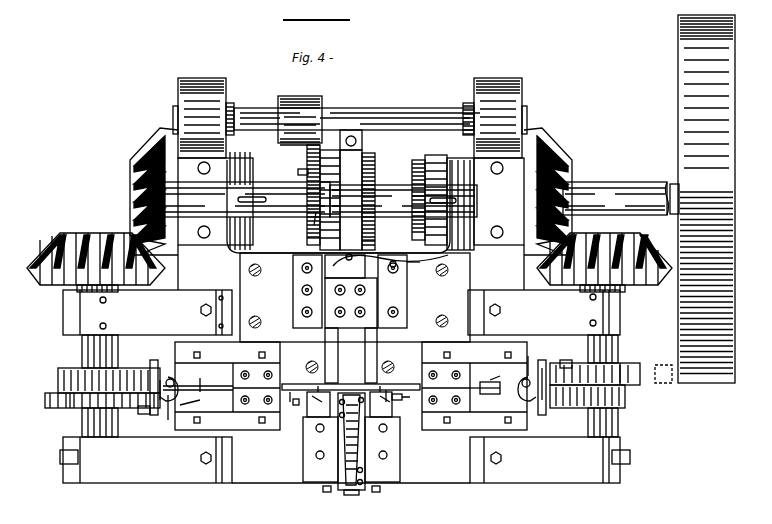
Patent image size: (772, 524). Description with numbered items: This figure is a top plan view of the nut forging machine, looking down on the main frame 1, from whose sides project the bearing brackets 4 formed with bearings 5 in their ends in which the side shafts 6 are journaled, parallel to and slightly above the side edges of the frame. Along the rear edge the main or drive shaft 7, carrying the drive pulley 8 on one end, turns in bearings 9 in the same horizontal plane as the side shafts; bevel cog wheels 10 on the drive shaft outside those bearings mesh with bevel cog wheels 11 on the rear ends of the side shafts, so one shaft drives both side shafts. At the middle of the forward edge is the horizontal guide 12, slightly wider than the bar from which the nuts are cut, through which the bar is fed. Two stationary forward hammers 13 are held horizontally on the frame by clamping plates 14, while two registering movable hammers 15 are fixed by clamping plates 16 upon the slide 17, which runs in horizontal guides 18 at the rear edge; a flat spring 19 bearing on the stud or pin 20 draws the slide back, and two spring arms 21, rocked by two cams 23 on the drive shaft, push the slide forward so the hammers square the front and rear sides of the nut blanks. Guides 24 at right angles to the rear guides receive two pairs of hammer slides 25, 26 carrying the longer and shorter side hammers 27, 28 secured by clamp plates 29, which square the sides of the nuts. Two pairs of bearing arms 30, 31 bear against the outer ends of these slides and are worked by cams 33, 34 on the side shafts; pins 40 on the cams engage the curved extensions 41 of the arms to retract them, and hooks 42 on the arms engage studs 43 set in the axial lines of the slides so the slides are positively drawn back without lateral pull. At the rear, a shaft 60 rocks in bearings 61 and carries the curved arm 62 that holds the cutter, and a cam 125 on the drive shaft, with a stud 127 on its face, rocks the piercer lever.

The main frame 1 is at (355, 313).
The bearing brackets 4 is at (345, 386).
The bearings 5 is at (351, 382).
The shafts 6 is at (110, 428).
The main or drive shaft 7 is at (396, 190).
The drive pulley 8 is at (706, 199).
The bearings 9 is at (246, 199).
The bevel cog wheels 10 is at (152, 150).
The bevel cog wheels 11 is at (64, 250).
The horizontal guide 12 is at (351, 444).
The stationary forward hammers 13 is at (318, 408).
The clamping plates 14 is at (310, 445).
The movable hammers 15 is at (325, 343).
The clamping plates 16 is at (351, 303).
The slide 17 is at (345, 266).
The horizontal guides 18 is at (300, 262).
The flat spring 19 is at (415, 265).
The stud or pin 20 is at (390, 255).
The spring arms 21 is at (308, 242).
The cams 23 is at (307, 165).
The guides 24 is at (351, 386).
The hammer slides 25 is at (340, 390).
The hammer slides 26 is at (333, 393).
The side hammers 27 is at (408, 381).
The side hammers 28 is at (298, 388).
The clamp plates 29 is at (350, 387).
The bearing arms 30 is at (160, 400).
The bearing arms 31 is at (154, 366).
The cams 33 is at (54, 408).
The cams 34 is at (60, 382).
The pins 40 is at (580, 357).
The extensions 41 is at (76, 408).
The hooks 42 is at (168, 422).
The studs 43 is at (348, 386).
The shaft 60 is at (388, 118).
The bearings 61 is at (201, 86).
The arm 62 is at (300, 106).
The cam 125 is at (312, 225).
The stud 127 is at (298, 172).